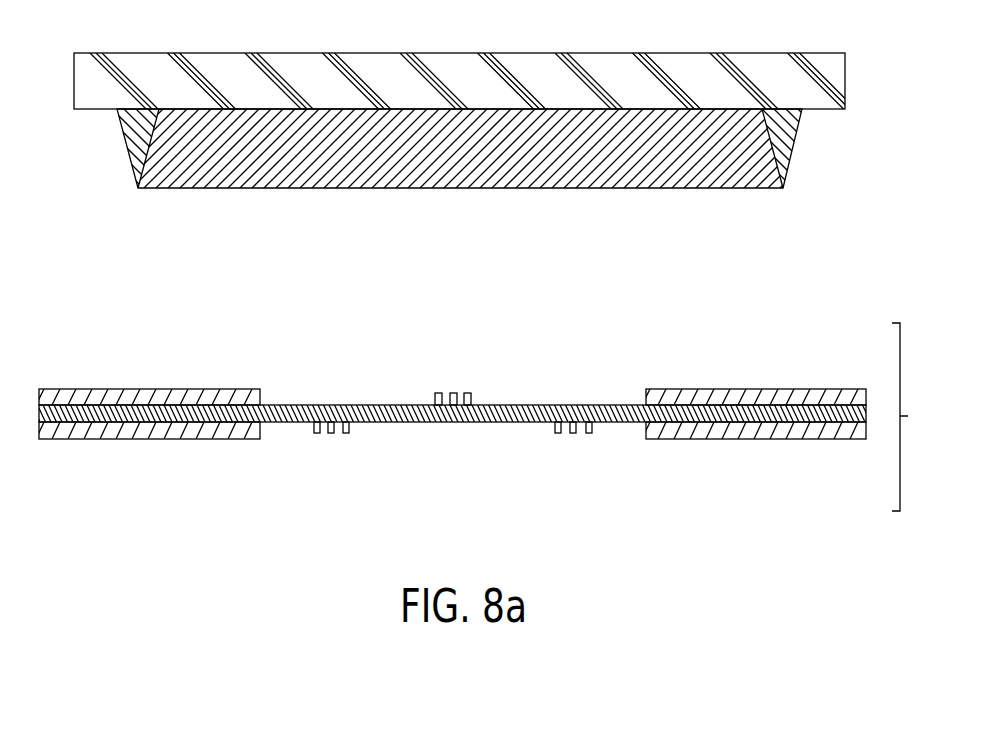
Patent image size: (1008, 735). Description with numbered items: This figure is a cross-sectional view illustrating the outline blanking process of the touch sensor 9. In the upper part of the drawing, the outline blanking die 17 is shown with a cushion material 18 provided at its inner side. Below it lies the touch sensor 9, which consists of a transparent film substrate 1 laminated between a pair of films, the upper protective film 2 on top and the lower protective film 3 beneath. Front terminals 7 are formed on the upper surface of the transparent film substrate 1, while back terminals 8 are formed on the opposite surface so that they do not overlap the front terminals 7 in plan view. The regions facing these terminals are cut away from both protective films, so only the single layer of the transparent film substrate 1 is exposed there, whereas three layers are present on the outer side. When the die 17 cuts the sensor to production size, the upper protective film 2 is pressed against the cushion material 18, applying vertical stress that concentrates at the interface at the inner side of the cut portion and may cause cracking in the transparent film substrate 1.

The transparent film substrate 1 is at (39, 408).
The upper protective film 2 is at (148, 394).
The lower protective film 3 is at (262, 441).
The front terminals 7 is at (468, 393).
The back terminals 8 is at (609, 466).
The touch sensor 9 is at (908, 417).
The outline blanking die 17 is at (822, 63).
The cushion material 18 is at (675, 189).